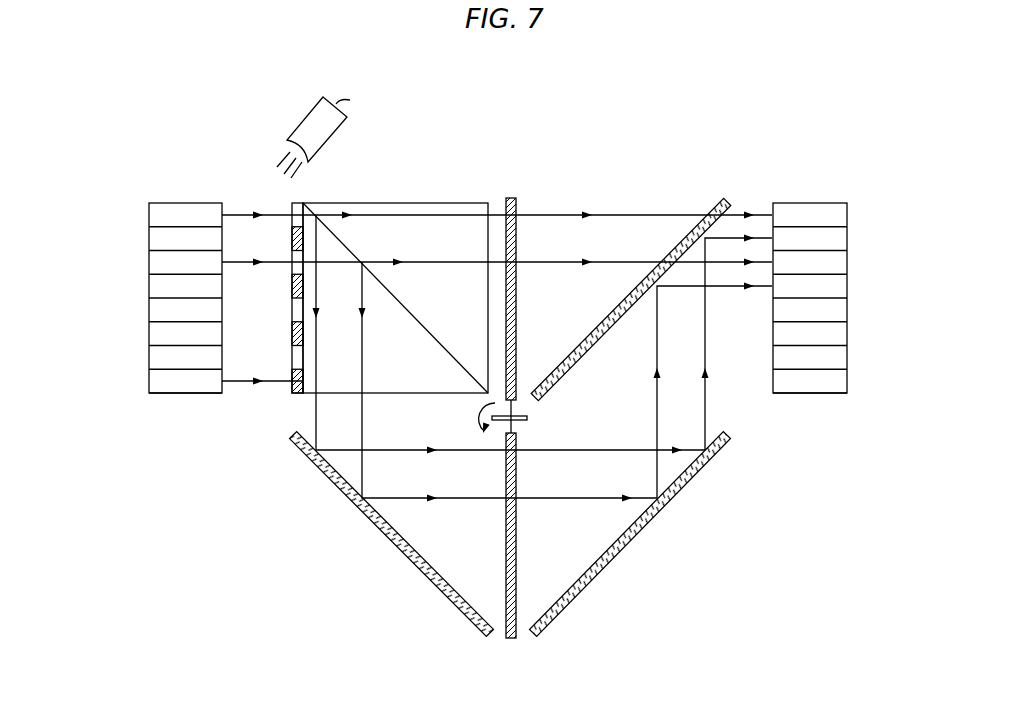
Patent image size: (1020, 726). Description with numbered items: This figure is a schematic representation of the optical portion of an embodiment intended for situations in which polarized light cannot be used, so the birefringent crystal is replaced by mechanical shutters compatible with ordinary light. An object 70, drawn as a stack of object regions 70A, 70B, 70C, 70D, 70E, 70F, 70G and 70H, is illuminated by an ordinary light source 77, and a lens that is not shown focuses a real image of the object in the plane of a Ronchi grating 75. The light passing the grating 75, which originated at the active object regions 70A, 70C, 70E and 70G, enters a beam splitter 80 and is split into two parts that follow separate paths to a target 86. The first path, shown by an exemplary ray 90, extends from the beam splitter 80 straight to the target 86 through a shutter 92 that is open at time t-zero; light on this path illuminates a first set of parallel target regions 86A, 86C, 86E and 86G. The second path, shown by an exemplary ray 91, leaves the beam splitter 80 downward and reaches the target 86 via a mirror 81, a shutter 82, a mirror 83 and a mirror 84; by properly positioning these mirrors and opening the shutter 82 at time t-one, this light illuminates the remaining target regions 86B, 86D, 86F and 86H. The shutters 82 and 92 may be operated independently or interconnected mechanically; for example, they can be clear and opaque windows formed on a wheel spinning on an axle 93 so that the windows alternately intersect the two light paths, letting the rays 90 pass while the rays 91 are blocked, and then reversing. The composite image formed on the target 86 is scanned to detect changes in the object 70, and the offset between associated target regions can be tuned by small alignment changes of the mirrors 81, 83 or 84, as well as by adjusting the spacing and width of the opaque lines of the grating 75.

The object 70 is at (150, 203).
The object region 70A is at (149, 215).
The object region 70B is at (149, 239).
The object region 70C is at (149, 262).
The object region 70D is at (149, 286).
The object region 70E is at (149, 310).
The object region 70F is at (149, 334).
The object region 70G is at (149, 357).
The object region 70H is at (149, 381).
The Ronchi grating 75 is at (293, 203).
The ordinary light source 77 is at (310, 115).
The beam splitter 80 is at (385, 203).
The mirror 81 is at (374, 526).
The shutter 82 is at (511, 640).
The mirror 83 is at (646, 526).
The mirror 84 is at (718, 205).
The target 86 is at (880, 198).
The target region 86A is at (847, 215).
The target region 86B is at (847, 239).
The target region 86C is at (847, 262).
The target region 86D is at (847, 286).
The target region 86E is at (847, 310).
The target region 86F is at (847, 334).
The target region 86G is at (847, 357).
The target region 86H is at (847, 381).
The exemplary ray 90 is at (550, 215).
The exemplary ray 91 is at (316, 410).
The shutter 92 is at (509, 198).
The axle 93 is at (527, 417).